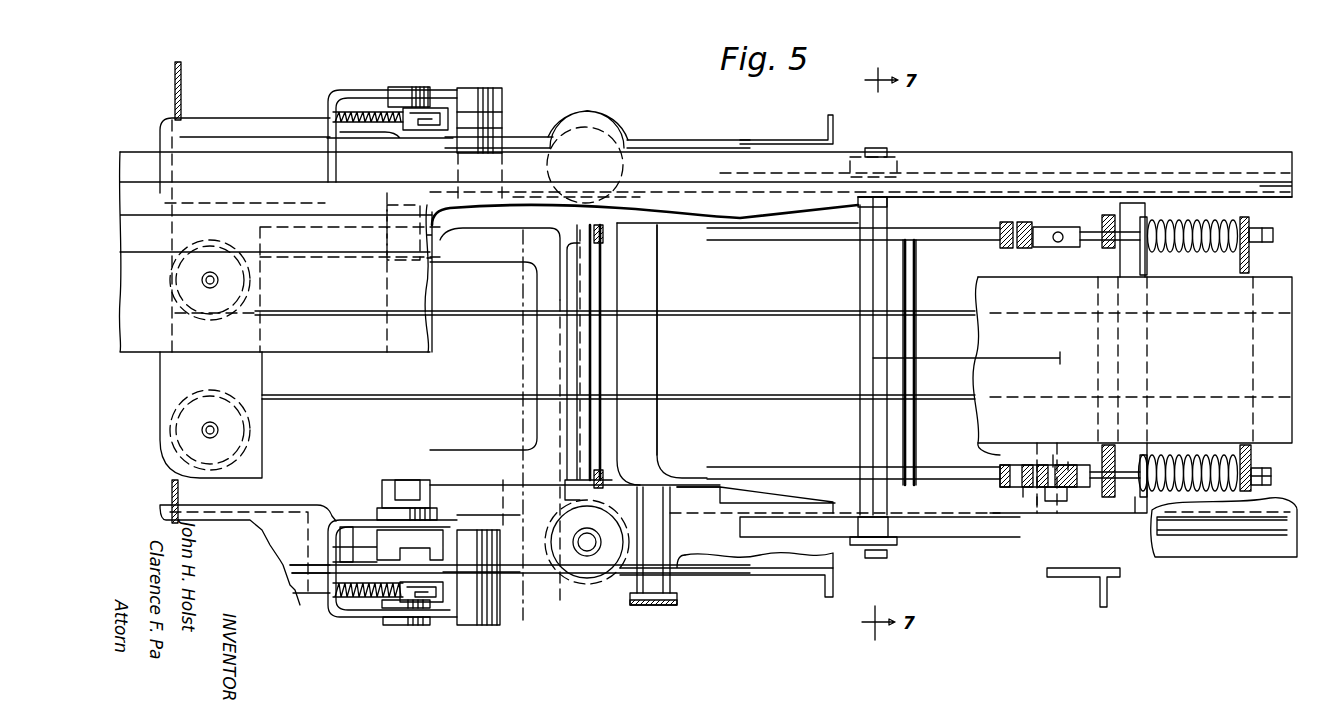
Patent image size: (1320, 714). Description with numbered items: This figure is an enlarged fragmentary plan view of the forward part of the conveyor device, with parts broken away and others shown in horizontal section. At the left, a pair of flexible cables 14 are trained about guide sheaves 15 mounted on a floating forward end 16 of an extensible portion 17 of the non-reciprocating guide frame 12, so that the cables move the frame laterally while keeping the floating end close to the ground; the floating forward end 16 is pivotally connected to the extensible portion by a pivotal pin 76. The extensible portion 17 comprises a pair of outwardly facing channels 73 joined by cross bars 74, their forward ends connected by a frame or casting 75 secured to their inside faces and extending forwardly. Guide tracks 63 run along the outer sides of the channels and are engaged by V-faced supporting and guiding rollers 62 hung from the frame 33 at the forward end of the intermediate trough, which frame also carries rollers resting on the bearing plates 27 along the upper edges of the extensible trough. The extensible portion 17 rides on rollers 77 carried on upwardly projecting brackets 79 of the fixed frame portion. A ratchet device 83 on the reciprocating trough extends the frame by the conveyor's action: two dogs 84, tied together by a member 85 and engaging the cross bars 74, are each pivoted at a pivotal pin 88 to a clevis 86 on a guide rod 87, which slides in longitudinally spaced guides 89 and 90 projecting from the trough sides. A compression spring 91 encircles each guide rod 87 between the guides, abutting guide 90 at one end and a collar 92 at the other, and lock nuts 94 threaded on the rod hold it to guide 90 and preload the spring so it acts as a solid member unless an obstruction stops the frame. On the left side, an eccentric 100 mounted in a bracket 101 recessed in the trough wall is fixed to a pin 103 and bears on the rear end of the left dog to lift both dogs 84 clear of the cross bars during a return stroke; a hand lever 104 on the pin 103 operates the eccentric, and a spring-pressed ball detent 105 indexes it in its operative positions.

The guide frame 12 is at (1258, 560).
The flexible cables 14 is at (775, 316).
The guide sheaves 15 is at (259, 291).
The floating forward end 16 is at (160, 392).
The extensible portion 17 is at (732, 532).
The bearing plates 27 is at (667, 160).
The frame 33 is at (543, 137).
The supporting and guiding rollers 62 is at (592, 150).
The guide tracks 63 is at (655, 190).
The channels 73 is at (905, 190).
The cross bars 74 is at (858, 352).
The frame or casting 75 is at (655, 373).
The pivotal pin 76 is at (572, 340).
The rollers 77 is at (855, 185).
The brackets 79 is at (890, 180).
The ratchet device 83 is at (960, 228).
The dogs 84 is at (823, 240).
The member 85 is at (917, 377).
The clevis 86 is at (1030, 227).
The guide rod 87 is at (1120, 250).
The pivotal pin 88 is at (1005, 221).
The guide 89 is at (1110, 220).
The guide 90 is at (1255, 217).
The compression spring 91 is at (1212, 265).
The collar 92 is at (1160, 250).
The lock nuts 94 is at (1265, 244).
The eccentric 100 is at (1055, 465).
The bracket 101 is at (1023, 492).
The pin 103 is at (1037, 505).
The hand lever 104 is at (1107, 600).
The detent 105 is at (1068, 462).